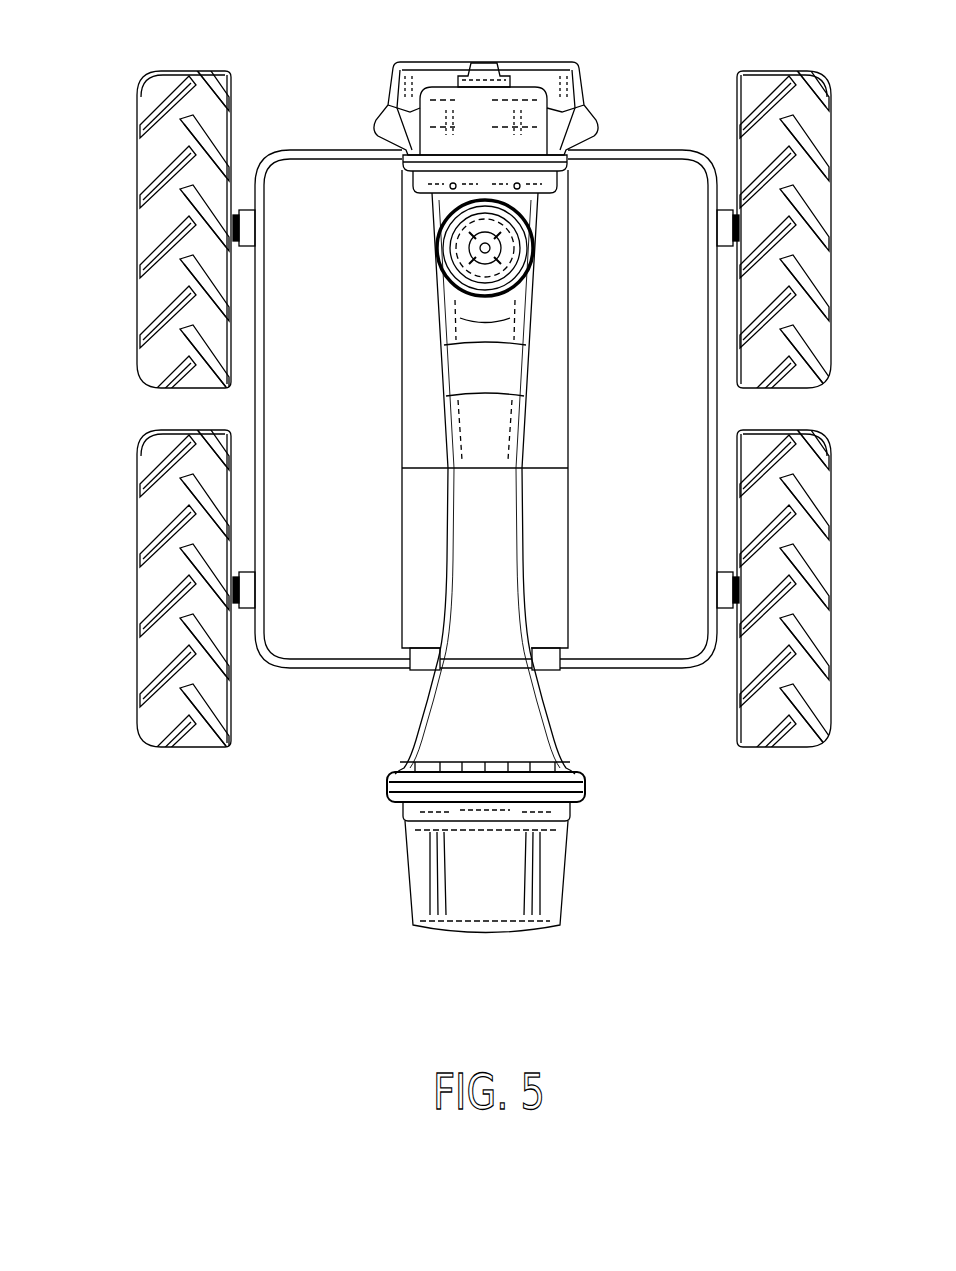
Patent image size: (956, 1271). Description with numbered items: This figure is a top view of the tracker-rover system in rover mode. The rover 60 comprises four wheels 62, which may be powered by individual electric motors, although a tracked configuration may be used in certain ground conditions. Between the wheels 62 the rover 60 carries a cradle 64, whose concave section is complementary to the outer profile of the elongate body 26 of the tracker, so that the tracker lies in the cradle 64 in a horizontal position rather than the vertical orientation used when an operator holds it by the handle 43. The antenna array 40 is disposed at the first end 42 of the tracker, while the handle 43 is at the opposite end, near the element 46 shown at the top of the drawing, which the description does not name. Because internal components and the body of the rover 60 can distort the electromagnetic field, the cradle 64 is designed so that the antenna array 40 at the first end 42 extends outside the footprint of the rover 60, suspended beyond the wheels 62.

The wheels 62 is at (165, 70).
The rover 60 is at (605, 173).
The cradle 64 is at (551, 578).
The upper cap assembly 46 is at (432, 62).
The handle 43 is at (493, 62).
The elongate body 26 is at (487, 648).
The first end 42 is at (470, 940).
The antenna array 40 is at (490, 905).